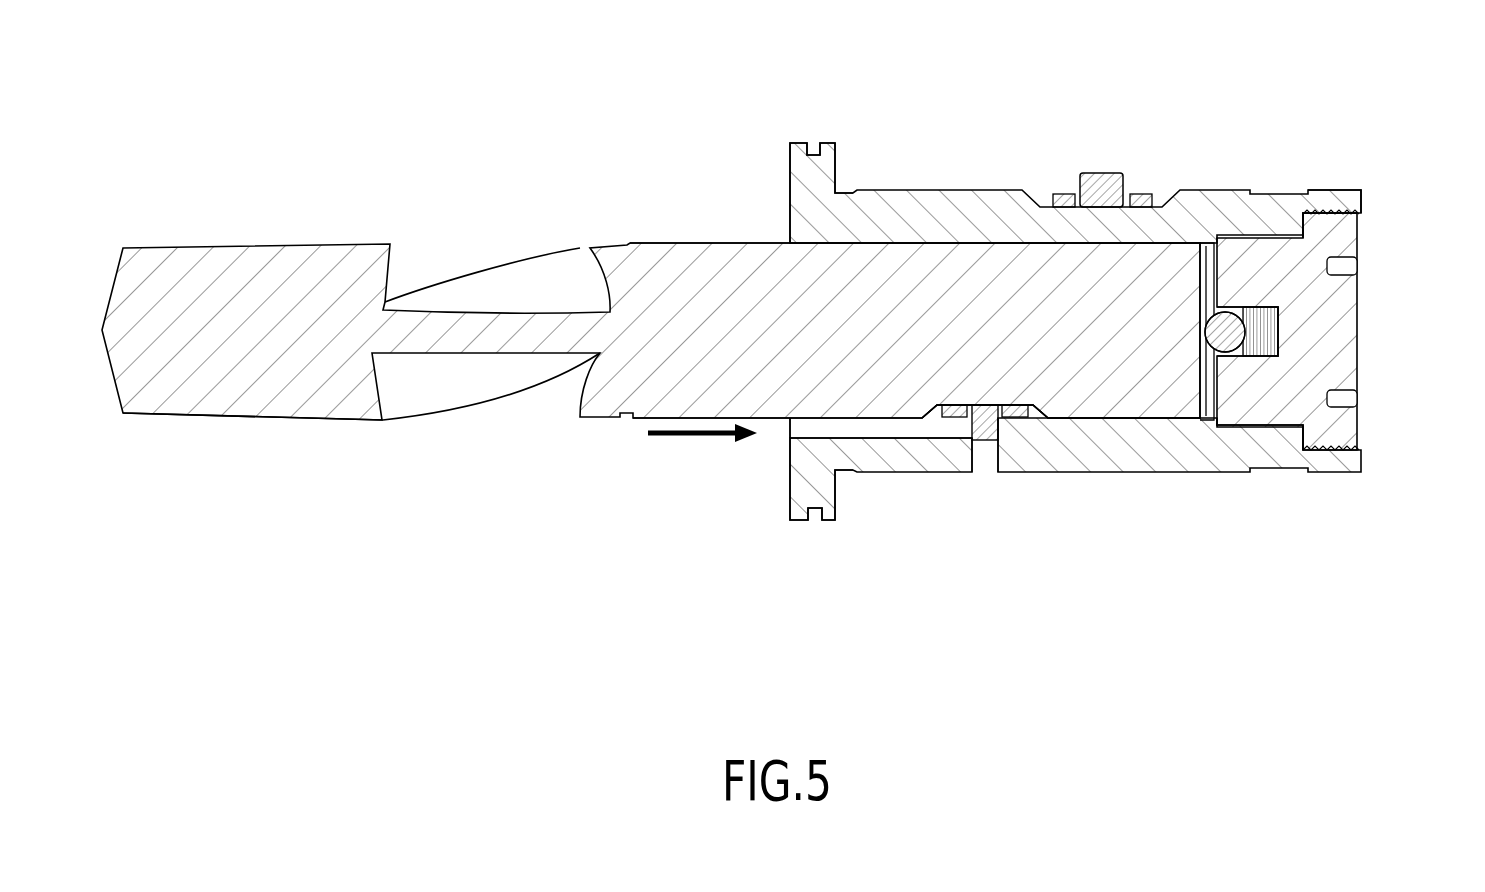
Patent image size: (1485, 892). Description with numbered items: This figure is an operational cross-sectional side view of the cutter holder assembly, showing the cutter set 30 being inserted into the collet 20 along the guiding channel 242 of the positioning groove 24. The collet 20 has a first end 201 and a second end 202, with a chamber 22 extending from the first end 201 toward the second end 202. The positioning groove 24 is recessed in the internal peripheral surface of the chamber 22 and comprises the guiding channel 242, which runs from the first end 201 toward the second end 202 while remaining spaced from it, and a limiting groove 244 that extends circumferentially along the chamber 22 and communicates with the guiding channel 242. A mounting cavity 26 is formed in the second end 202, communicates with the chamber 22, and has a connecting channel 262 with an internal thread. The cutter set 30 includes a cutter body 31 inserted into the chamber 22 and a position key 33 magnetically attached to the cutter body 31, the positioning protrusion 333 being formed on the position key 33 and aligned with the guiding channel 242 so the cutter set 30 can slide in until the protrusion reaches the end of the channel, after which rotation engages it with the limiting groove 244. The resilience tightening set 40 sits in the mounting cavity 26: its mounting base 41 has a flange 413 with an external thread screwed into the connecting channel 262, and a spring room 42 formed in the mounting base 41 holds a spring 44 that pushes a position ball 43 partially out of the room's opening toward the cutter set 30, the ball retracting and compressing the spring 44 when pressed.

The collet 20 is at (1082, 310).
The first end 201 is at (790, 170).
The second end 202 is at (1362, 203).
The chamber 22 is at (922, 321).
The positioning groove 24 is at (810, 430).
The guiding channel 242 is at (917, 437).
The limiting groove 244 is at (998, 455).
The mounting cavity 26 is at (1257, 427).
The connecting channel 262 is at (1340, 443).
The cutter set 30 is at (651, 313).
The cutter body 31 is at (272, 398).
The position key 33 is at (921, 401).
The positioning protrusion 333 is at (985, 416).
The resilience tightening set 40 is at (1279, 292).
The mounting base 41 is at (1344, 350).
The flange 413 is at (1345, 233).
The spring room 42 is at (1255, 308).
The position ball 43 is at (1222, 332).
The spring 44 is at (1240, 358).